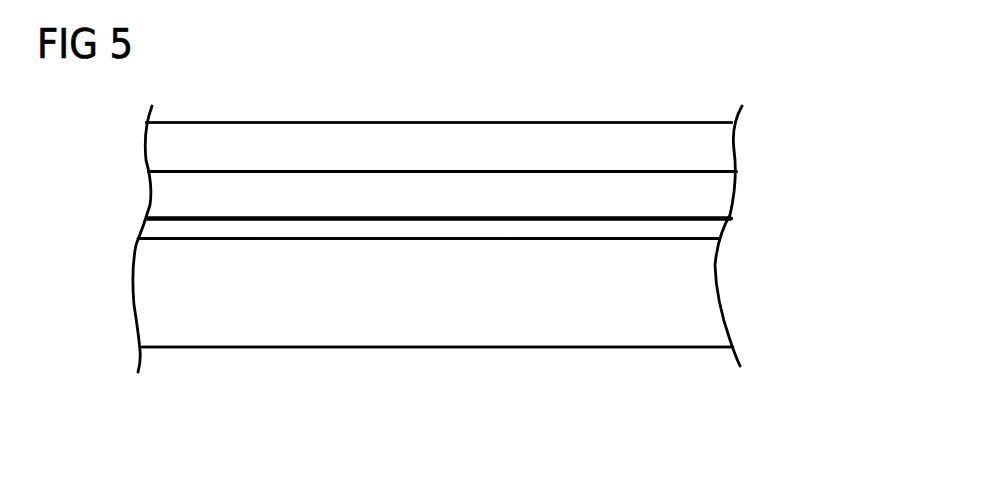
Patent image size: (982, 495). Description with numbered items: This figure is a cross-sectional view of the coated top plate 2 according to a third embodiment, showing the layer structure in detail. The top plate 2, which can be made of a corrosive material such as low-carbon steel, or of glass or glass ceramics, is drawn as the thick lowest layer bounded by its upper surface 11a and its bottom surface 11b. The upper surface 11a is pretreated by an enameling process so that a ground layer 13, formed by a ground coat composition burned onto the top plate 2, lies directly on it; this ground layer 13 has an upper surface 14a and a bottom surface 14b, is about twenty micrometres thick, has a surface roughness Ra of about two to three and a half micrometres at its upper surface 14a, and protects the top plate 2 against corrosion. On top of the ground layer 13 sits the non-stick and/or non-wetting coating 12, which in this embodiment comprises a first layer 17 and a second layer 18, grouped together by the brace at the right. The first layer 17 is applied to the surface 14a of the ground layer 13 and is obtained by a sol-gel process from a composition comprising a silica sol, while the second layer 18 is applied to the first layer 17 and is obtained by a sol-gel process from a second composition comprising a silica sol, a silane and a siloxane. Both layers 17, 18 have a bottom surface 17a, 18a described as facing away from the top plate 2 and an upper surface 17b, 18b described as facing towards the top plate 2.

The top plate 2 is at (687, 312).
The upper surface 11a is at (184, 238).
The bottom surface 11b is at (588, 347).
The non-stick and/or non-wetting coating 12 is at (815, 103).
The ground layer 13 is at (678, 233).
The upper surface 14a is at (275, 218).
The bottom surface 14b is at (451, 239).
The first layer 17 is at (687, 200).
The bottom surface 17a is at (490, 172).
The upper surface 17b is at (398, 219).
The second layer 18 is at (688, 145).
The bottom surface 18a is at (678, 123).
The upper surface 18b is at (603, 172).